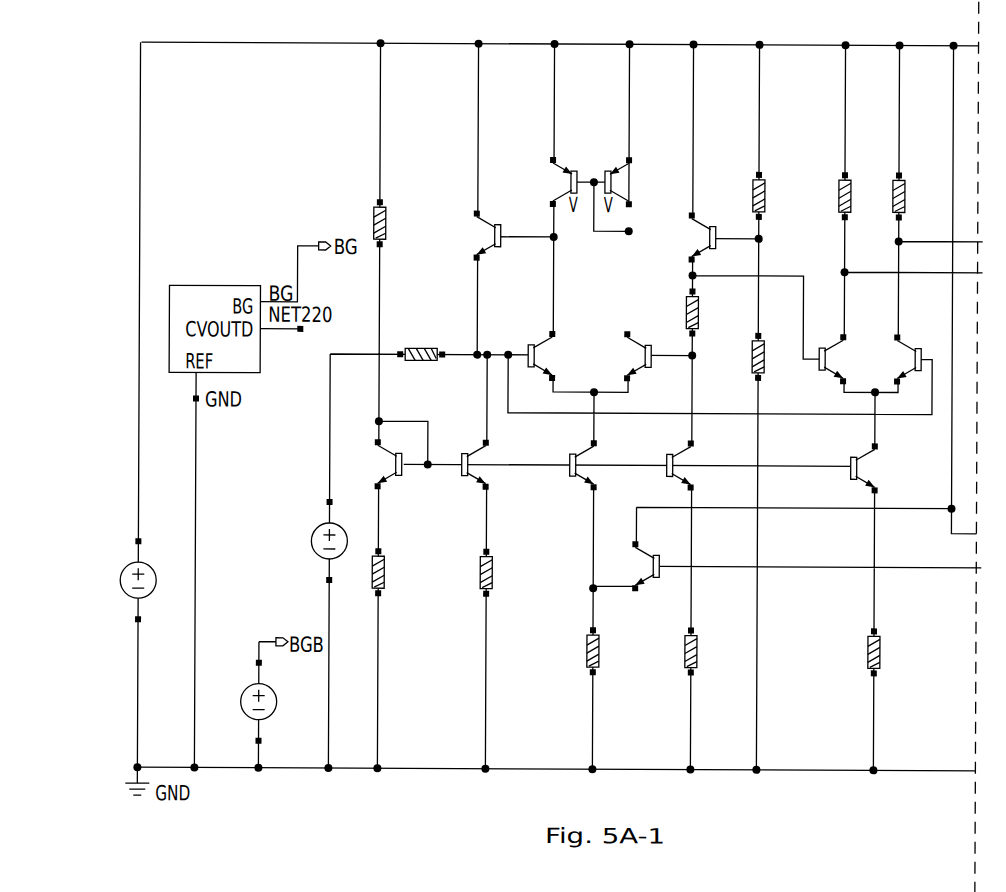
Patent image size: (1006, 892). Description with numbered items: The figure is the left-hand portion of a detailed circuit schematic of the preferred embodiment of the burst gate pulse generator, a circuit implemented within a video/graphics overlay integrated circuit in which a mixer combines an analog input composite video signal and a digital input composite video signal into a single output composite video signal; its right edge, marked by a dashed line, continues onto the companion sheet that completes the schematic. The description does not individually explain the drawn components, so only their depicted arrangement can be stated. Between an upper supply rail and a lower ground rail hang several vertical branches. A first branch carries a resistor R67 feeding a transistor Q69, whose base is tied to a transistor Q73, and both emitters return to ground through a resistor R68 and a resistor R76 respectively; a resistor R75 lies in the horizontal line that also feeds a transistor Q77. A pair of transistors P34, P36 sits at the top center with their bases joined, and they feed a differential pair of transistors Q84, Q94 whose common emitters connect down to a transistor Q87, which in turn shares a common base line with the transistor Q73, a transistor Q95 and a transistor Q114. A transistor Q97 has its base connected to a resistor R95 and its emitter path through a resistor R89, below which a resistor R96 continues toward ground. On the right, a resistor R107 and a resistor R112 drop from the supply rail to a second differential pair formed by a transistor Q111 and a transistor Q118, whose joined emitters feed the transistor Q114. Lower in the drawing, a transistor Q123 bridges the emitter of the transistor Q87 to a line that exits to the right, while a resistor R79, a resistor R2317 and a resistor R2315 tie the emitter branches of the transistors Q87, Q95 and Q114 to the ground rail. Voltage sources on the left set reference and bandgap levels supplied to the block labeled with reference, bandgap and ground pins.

The resistor R67 is at (397, 223).
The resistor R68 is at (395, 572).
The resistor R75 is at (421, 341).
The resistor R76 is at (502, 573).
The resistor R79 is at (574, 651).
The resistor R89 is at (709, 313).
The resistor R95 is at (741, 196).
The resistor R96 is at (739, 357).
The resistor R107 is at (823, 196).
The resistor R112 is at (920, 196).
The resistor R2315 is at (849, 652).
The resistor R2317 is at (662, 651).
The NPN transistor Q69 is at (396, 458).
The NPN transistor Q73 is at (468, 459).
The NPN transistor Q77 is at (495, 231).
The NPN transistor Q84 is at (532, 351).
The NPN transistor Q87 is at (576, 460).
The NPN transistor Q94 is at (645, 351).
The NPN transistor Q95 is at (672, 460).
The NPN transistor Q97 is at (688, 237).
The NPN transistor Q111 is at (818, 366).
The NPN transistor Q114 is at (851, 463).
The NPN transistor Q118 is at (918, 355).
The NPN transistor Q123 is at (657, 560).
The PNP transistor P34 is at (550, 182).
The PNP transistor P36 is at (632, 182).